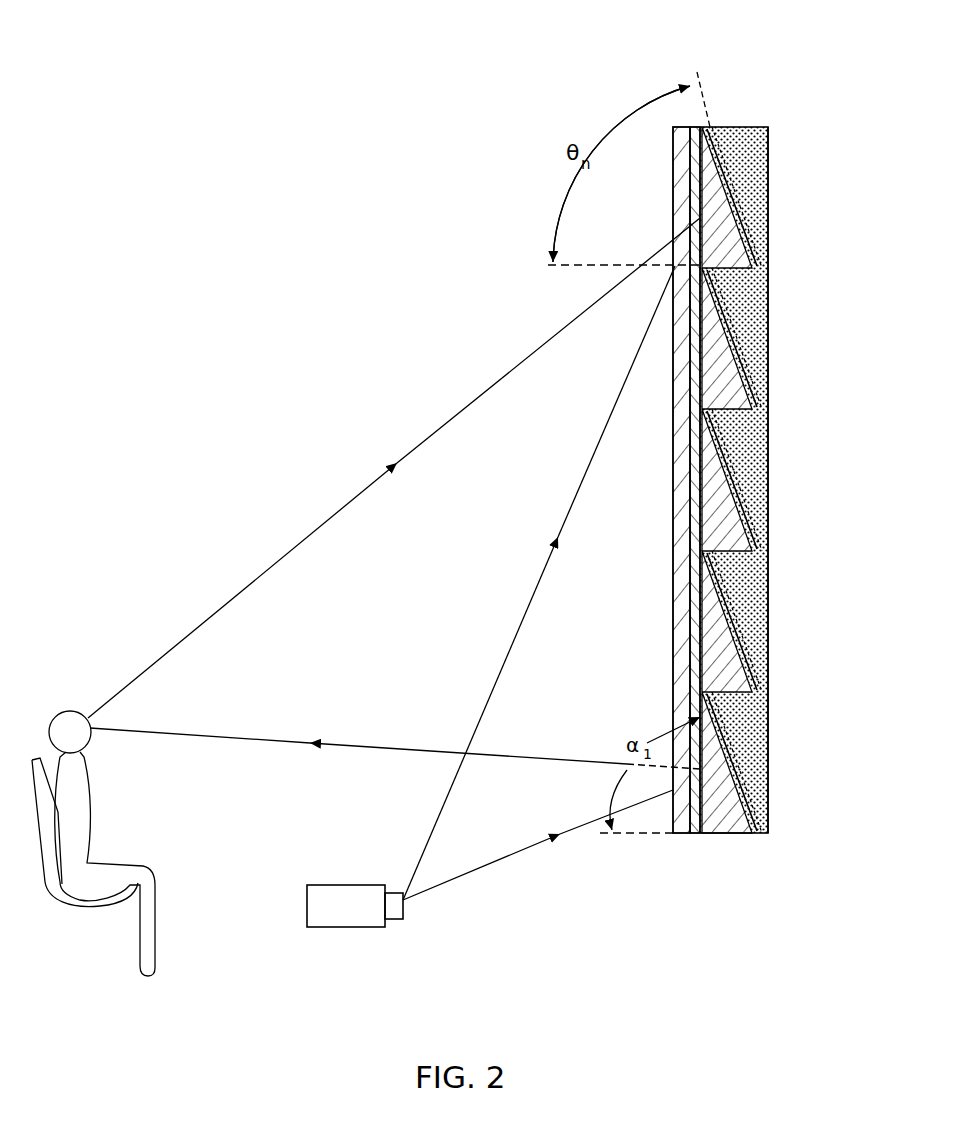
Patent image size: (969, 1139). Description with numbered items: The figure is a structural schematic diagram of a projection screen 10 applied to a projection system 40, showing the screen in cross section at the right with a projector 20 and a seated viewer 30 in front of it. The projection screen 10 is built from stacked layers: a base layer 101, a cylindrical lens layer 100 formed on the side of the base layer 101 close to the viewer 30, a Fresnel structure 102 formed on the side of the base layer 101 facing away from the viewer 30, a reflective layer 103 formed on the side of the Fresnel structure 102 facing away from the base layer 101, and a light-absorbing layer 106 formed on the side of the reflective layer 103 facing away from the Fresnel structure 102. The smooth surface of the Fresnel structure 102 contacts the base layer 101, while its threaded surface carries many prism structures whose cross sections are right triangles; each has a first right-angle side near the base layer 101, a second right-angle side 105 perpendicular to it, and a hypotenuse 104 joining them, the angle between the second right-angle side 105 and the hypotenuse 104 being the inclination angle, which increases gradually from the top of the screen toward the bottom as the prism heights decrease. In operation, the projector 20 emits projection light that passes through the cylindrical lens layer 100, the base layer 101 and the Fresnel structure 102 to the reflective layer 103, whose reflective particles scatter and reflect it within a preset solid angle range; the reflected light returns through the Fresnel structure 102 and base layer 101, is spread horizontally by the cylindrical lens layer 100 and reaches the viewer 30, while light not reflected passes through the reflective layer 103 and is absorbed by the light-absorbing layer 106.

The projection screen 10 is at (707, 450).
The projector 20 is at (348, 910).
The viewer 30 is at (80, 832).
The projection system 40 is at (373, 116).
The cylindrical lens layer 100 is at (682, 836).
The base layer 101 is at (703, 836).
The Fresnel structure 102 is at (758, 219).
The reflective layer 103 is at (740, 390).
The hypotenuse 104 is at (735, 326).
The second right-angle side 105 is at (748, 290).
The light-absorbing layer 106 is at (752, 461).